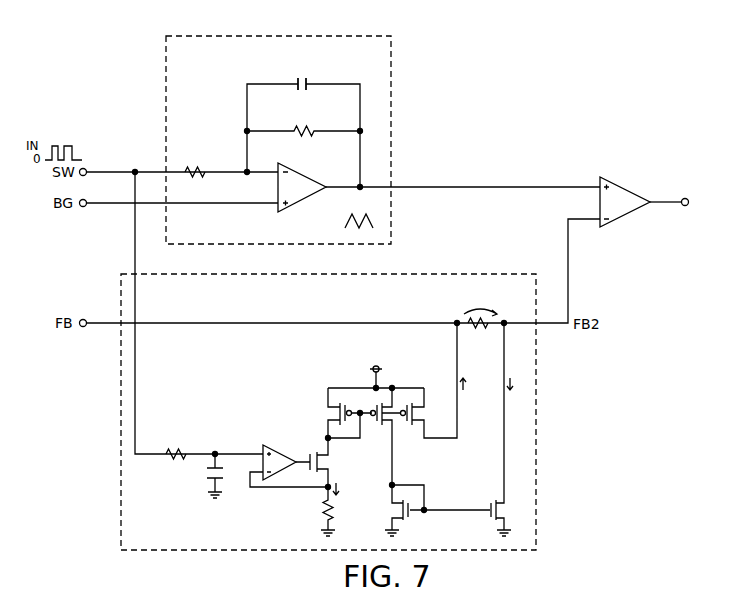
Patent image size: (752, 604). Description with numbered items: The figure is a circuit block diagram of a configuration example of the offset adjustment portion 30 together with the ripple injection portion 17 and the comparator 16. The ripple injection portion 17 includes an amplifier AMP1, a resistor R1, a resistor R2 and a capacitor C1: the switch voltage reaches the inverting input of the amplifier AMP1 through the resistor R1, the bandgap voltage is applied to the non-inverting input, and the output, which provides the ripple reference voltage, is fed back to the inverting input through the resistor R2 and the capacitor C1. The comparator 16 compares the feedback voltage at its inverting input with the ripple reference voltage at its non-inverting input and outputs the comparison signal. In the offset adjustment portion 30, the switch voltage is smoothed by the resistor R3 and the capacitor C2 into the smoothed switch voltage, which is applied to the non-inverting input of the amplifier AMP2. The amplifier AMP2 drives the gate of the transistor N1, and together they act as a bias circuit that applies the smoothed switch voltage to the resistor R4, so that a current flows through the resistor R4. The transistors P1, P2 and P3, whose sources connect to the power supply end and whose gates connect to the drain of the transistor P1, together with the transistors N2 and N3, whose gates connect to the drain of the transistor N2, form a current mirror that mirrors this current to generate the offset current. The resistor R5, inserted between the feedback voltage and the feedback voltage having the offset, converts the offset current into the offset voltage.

The ripple injection portion 17 is at (281, 36).
The offset adjustment portion 30 is at (323, 274).
The comparator 16 is at (623, 188).
The resistor R1 is at (206, 163).
The resistor R2 is at (304, 124).
The capacitor C1 is at (303, 76).
The amplifier AMP1 is at (303, 166).
The resistor R3 is at (177, 446).
The capacitor C2 is at (200, 476).
The amplifier AMP2 is at (287, 442).
The N-channel type MOSFET N1 is at (336, 462).
The resistor R4 is at (313, 511).
The P-channel type MOSFET P1 is at (338, 413).
The P-channel type MOSFET P2 is at (429, 380).
The P-channel type MOSFET P3 is at (378, 428).
The N-channel type MOSFET N2 is at (396, 510).
The N-channel type MOSFET N3 is at (480, 429).
The resistor R5 is at (478, 335).